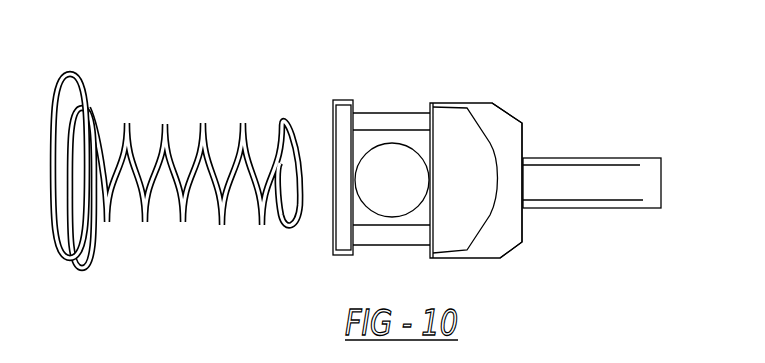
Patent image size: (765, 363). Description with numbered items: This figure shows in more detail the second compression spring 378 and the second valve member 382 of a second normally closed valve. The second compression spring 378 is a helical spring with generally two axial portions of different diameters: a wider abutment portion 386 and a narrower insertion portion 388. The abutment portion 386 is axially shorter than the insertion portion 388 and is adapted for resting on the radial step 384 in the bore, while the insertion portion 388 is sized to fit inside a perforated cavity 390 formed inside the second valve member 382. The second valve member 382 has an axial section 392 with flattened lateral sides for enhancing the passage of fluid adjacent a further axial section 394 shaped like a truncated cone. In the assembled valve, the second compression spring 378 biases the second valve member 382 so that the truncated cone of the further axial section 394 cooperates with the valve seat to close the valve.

The second compression spring 378 is at (176, 190).
The second valve member 382 is at (457, 109).
The radial step 384 is at (610, 188).
The abutment portion 386 is at (80, 262).
The insertion portion 388 is at (183, 224).
The perforated cavity 390 is at (393, 188).
The axial section 392 is at (457, 140).
The further axial section 394 is at (508, 112).